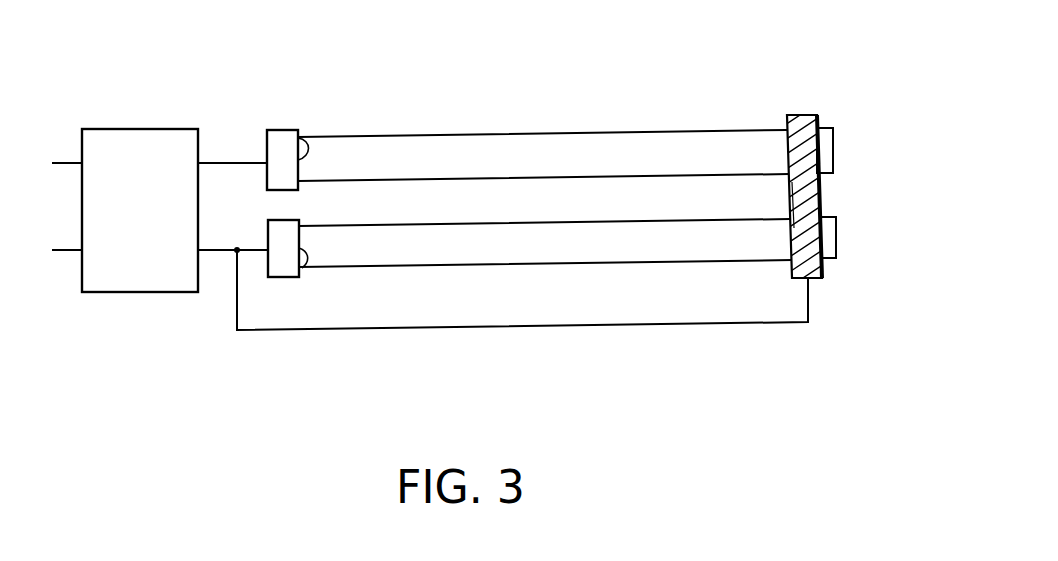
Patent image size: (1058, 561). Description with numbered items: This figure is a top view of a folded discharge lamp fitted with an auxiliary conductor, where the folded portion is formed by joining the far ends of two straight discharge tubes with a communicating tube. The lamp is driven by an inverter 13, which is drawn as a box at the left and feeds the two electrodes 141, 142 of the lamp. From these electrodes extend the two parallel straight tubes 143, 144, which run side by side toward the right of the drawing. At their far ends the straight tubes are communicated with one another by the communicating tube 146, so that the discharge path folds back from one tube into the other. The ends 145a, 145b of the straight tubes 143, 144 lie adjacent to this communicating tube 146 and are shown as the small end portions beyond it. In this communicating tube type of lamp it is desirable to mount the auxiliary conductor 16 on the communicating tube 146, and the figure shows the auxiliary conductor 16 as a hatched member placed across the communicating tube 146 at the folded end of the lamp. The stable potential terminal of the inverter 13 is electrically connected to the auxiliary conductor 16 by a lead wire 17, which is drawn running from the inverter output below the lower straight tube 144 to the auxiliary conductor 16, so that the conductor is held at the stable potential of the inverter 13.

The inverter 13 is at (138, 129).
The electrode 141 is at (306, 136).
The electrode 142 is at (305, 270).
The straight tube 143 is at (565, 132).
The straight tube 144 is at (572, 264).
The auxiliary conductor 16 is at (797, 115).
The end of straight tube 145a is at (833, 150).
The end of straight tube 145b is at (836, 237).
The communicating tube 146 is at (787, 201).
The lead wire 17 is at (503, 330).